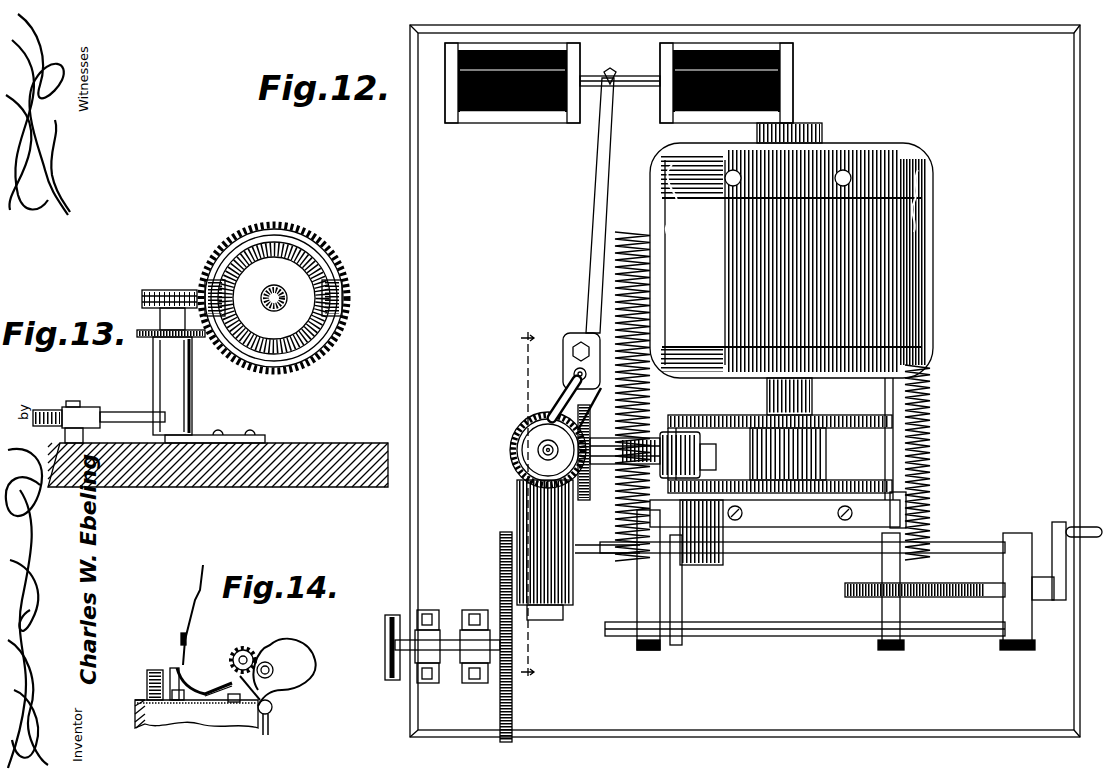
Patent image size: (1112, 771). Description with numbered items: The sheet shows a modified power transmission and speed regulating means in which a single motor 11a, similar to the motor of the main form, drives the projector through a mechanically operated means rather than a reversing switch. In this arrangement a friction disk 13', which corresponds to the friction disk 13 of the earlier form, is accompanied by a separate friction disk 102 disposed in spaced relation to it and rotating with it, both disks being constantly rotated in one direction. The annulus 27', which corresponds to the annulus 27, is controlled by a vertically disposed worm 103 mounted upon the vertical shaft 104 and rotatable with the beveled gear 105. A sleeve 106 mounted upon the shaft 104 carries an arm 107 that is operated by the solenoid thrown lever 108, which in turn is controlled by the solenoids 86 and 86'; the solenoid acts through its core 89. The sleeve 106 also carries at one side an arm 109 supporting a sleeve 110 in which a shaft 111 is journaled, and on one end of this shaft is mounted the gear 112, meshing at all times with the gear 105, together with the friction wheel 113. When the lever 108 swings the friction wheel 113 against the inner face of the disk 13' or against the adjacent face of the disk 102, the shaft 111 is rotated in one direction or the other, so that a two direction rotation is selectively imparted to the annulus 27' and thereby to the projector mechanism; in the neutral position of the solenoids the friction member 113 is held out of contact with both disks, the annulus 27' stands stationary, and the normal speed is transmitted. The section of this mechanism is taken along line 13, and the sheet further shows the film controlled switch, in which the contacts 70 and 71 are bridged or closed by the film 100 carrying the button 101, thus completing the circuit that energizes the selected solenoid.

In FIG. 12, the solenoid 86 is at (512, 99).
In FIG. 12, the solenoid 86' is at (749, 83).
In FIG. 12, the core 89 is at (632, 90).
In FIG. 12, the solenoid thrown lever 108 is at (586, 243).
In FIG. 13, the solenoid thrown lever 108 is at (44, 408).
In FIG. 12, the motor 11a is at (933, 268).
In FIG. 12, the friction disk 102 is at (932, 418).
In FIG. 12, the friction disk 13' is at (828, 439).
In FIG. 12, the beveled gear 105 is at (514, 432).
In FIG. 13, the beveled gear 105 is at (200, 340).
In FIG. 12, the vertical shaft 104 is at (540, 450).
In FIG. 12, the worm 103 is at (526, 466).
In FIG. 13, the worm 103 is at (155, 290).
In FIG. 12, the arm 107 is at (566, 390).
In FIG. 13, the arm 107 is at (116, 410).
In FIG. 12, the gear 112 is at (609, 391).
In FIG. 12, the sleeve 110 is at (604, 432).
In FIG. 12, the friction wheel 113 is at (682, 440).
In FIG. 12, the shaft 111 is at (714, 470).
In FIG. 12, the arm 109 is at (620, 571).
In FIG. 12, the friction disk 13 is at (531, 504).
In FIG. 12, the annulus 27' is at (546, 611).
In FIG. 13, the annulus 27 is at (289, 298).
In FIG. 13, the sleeve 106 is at (193, 400).
In FIG. 14, the contact 70 is at (170, 672).
In FIG. 14, the contact 71 is at (180, 672).
In FIG. 14, the film 100 is at (204, 603).
In FIG. 14, the button 101 is at (190, 638).